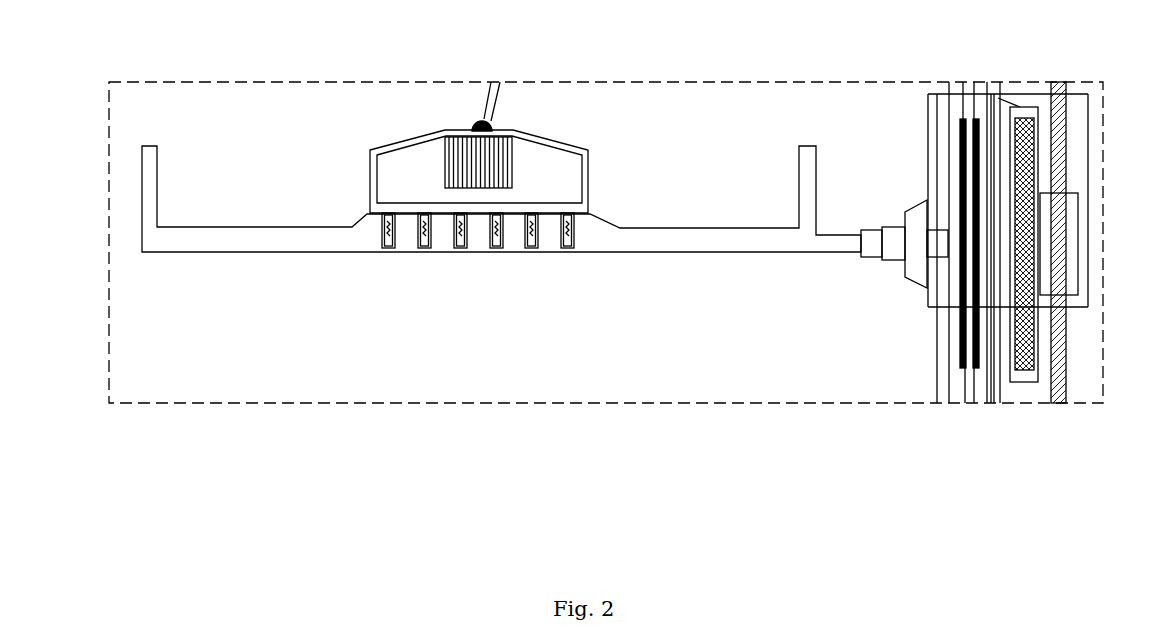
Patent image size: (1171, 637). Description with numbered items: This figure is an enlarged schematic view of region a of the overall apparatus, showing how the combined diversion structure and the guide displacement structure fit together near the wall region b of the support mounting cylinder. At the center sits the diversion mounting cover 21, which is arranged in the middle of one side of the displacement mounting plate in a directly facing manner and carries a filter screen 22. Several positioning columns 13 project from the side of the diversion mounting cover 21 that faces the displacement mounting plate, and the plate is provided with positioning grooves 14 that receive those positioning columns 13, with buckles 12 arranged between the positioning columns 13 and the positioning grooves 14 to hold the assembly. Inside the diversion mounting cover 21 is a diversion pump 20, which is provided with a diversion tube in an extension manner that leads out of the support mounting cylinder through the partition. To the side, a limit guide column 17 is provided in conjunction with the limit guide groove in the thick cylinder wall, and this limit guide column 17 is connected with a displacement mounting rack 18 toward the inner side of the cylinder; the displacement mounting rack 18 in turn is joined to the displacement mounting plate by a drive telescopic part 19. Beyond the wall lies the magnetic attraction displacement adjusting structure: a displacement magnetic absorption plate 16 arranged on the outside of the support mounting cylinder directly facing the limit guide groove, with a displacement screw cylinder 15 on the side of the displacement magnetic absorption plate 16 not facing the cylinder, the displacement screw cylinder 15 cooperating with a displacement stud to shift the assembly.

The enlarged region a is at (160, 81).
The battery housing region b is at (1088, 137).
The buckle 12 is at (381, 228).
The positioning column 13 is at (384, 248).
The positioning groove 14 is at (425, 250).
The displacement screw cylinder 15 is at (1077, 250).
The displacement magnetic absorption plate 16 is at (1035, 105).
The limit guide column 17 is at (957, 120).
The displacement mounting rack 18 is at (915, 232).
The drive telescopic part 19 is at (873, 228).
The diversion pump 20 is at (445, 130).
The diversion mounting cover 21 is at (388, 145).
The filter screen 22 is at (370, 187).